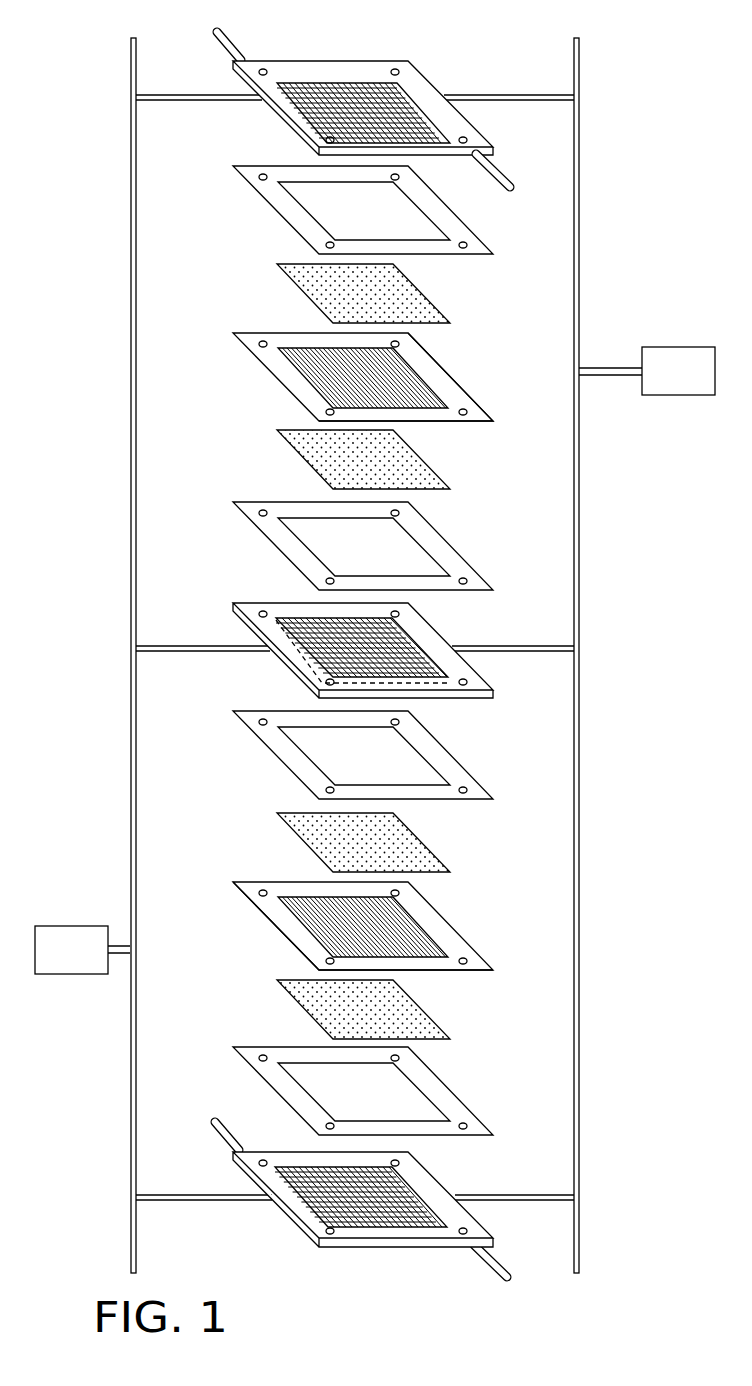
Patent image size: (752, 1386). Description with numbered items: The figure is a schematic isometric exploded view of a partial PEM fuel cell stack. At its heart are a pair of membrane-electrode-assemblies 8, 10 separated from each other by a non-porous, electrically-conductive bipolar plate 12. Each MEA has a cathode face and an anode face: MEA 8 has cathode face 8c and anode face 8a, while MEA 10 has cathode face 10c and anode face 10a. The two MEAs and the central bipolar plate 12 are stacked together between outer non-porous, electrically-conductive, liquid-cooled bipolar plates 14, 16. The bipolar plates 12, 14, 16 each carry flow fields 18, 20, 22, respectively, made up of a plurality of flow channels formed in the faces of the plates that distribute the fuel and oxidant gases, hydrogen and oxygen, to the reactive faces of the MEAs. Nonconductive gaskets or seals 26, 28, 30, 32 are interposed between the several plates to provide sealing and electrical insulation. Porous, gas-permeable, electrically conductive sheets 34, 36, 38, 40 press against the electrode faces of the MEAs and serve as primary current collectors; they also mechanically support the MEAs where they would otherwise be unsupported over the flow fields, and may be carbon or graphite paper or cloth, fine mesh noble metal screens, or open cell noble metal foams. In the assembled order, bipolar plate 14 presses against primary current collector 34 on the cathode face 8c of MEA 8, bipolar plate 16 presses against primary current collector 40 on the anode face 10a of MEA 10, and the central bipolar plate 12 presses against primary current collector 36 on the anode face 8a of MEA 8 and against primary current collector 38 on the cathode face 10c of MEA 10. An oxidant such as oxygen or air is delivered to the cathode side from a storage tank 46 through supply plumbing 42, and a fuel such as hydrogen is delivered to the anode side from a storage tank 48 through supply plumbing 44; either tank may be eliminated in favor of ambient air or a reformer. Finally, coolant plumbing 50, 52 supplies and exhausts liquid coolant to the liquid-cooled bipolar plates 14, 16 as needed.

The membrane-electrode-assembly 8 is at (347, 399).
The anode face 8a is at (448, 422).
The cathode face 8c is at (428, 383).
The membrane-electrode-assembly 10 is at (371, 907).
The anode face 10a is at (277, 928).
The cathode face 10c is at (305, 903).
The bipolar plate 12 is at (333, 641).
The bipolar plate 14 is at (323, 108).
The bipolar plate 16 is at (385, 1203).
The flow field 18 is at (302, 107).
The flow field 20 is at (397, 635).
The flow field 22 is at (318, 1212).
The gasket 26 is at (280, 201).
The gasket 28 is at (275, 540).
The gasket 30 is at (467, 777).
The gasket 32 is at (445, 1090).
The primary current collector 34 is at (308, 283).
The primary current collector 36 is at (312, 453).
The primary current collector 38 is at (408, 837).
The primary current collector 40 is at (415, 1012).
The supply plumbing 42 is at (579, 493).
The supply plumbing 44 is at (130, 1031).
The storage tank 46 is at (700, 350).
The storage tank 48 is at (47, 930).
The coolant plumbing 50 is at (233, 47).
The coolant plumbing 52 is at (498, 173).